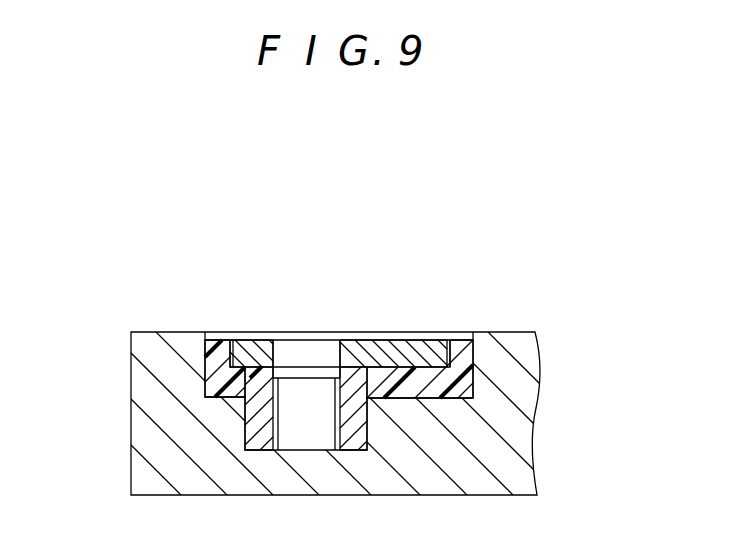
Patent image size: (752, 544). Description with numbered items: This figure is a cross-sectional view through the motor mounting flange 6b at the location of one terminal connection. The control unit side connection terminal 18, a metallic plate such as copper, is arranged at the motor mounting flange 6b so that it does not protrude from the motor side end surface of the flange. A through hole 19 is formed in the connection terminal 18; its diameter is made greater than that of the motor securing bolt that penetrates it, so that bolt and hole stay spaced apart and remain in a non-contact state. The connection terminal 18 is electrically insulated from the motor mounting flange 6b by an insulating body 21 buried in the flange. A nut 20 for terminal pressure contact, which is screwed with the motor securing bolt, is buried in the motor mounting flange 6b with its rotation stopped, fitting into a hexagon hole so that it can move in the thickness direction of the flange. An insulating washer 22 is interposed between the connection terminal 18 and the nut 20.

The motor mounting flange 6b is at (515, 424).
The control unit side connection terminal 18 is at (408, 343).
The through hole 19 is at (323, 343).
The nut for terminal pressure contact 20 is at (262, 427).
The insulating body 21 is at (222, 377).
The insulating washer 22 is at (252, 343).